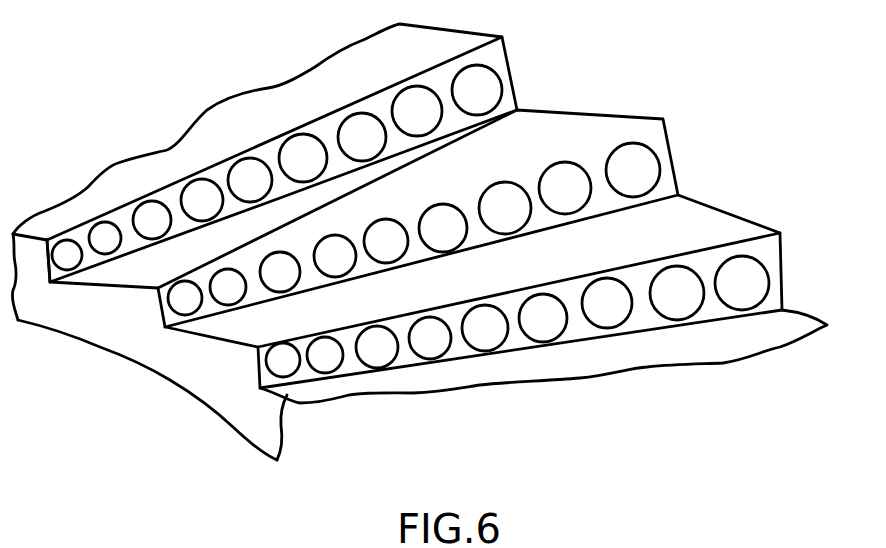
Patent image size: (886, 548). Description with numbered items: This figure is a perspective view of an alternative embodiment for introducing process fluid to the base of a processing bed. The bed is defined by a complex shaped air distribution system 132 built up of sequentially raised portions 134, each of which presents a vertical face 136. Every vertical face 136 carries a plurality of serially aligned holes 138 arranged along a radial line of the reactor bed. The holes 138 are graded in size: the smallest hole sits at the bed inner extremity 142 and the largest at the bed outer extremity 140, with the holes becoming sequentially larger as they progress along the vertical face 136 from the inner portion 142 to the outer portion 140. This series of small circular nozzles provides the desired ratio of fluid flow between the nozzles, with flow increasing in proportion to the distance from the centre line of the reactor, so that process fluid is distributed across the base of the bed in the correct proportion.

The air distribution system 132 is at (613, 92).
The sequentially raised portions 134 is at (737, 227).
The vertical face 136 is at (772, 250).
The serially aligned holes 138 is at (659, 161).
The bed outer extremity 140 is at (647, 113).
The bed inner extremity 142 is at (148, 310).